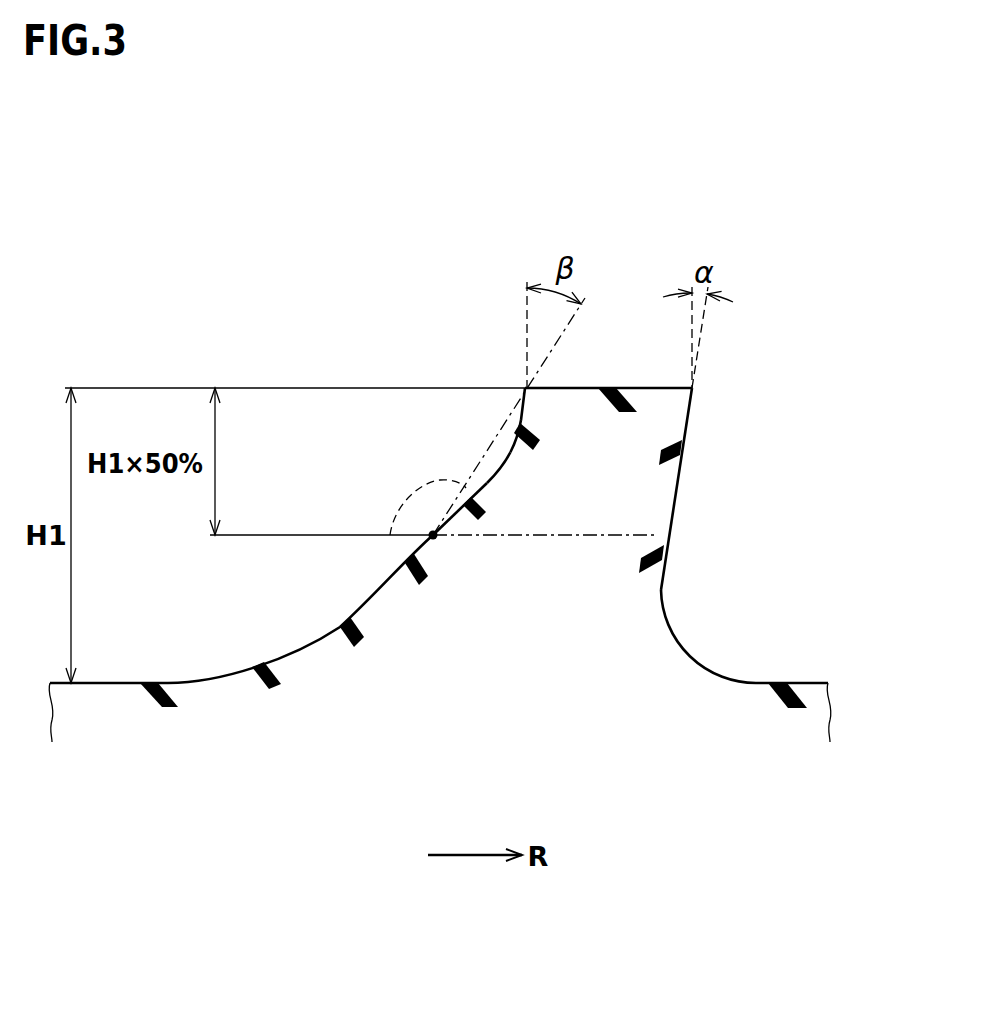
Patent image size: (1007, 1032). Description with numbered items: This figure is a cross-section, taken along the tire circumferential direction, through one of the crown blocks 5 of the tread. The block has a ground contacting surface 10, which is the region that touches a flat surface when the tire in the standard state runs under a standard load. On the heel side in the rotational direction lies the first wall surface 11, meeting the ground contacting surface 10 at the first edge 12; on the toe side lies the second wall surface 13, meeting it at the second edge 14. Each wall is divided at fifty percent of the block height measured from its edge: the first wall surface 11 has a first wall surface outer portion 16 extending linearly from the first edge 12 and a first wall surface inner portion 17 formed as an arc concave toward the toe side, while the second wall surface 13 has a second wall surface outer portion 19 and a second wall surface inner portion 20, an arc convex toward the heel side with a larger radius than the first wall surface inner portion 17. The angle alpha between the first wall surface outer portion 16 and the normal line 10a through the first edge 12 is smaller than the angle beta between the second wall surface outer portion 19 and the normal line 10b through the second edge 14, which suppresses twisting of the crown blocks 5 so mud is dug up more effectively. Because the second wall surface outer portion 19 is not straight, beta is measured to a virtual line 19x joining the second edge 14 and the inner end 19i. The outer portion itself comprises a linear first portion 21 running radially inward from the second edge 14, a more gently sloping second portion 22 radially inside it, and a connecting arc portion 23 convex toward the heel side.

The crown block 5 is at (765, 275).
The ground contacting surface 10 is at (612, 388).
The normal line of the ground contacting surface passing through the first edge 10a is at (692, 327).
The normal line of the ground contacting surface passing through the second edge 10b is at (525, 292).
The first wall surface 11 is at (813, 450).
The first edge 12 is at (692, 388).
The second wall surface 13 is at (232, 262).
The second edge 14 is at (524, 390).
The first wall surface outer portion 16 is at (677, 480).
The first wall surface inner portion 17 is at (682, 640).
The second wall surface outer portion 19 is at (292, 313).
The inner end of the second wall surface outer portion 19i is at (433, 535).
The virtual line 19x is at (390, 535).
The second wall surface inner portion 20 is at (315, 643).
The first portion 21 is at (522, 405).
The second portion 22 is at (492, 476).
The arc portion 23 is at (515, 435).